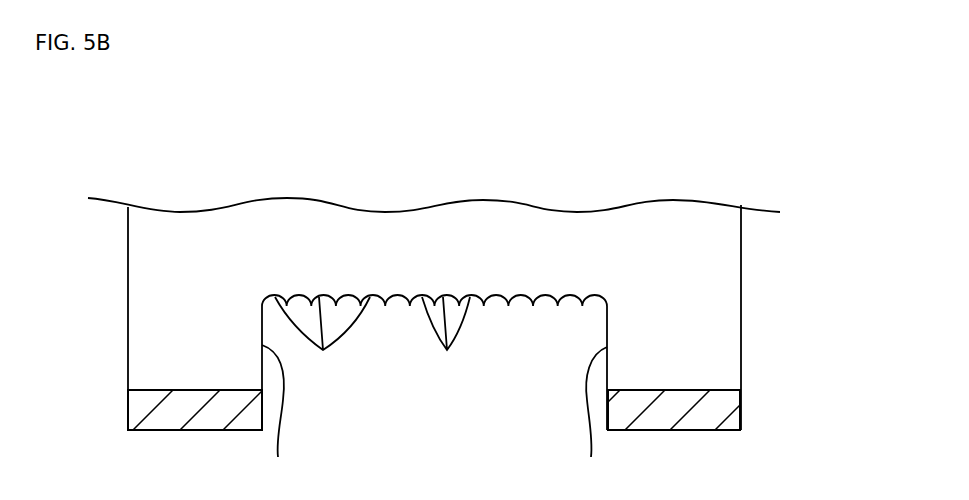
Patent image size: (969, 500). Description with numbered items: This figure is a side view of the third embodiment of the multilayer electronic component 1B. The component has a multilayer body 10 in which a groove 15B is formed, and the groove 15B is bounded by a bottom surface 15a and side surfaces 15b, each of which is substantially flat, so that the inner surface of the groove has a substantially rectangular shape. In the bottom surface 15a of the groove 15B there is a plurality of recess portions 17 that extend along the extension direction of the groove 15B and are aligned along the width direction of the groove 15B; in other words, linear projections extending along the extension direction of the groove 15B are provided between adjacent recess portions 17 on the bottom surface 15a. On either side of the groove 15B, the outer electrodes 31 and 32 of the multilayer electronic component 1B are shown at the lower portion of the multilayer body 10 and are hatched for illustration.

The multilayer electronic component 1B is at (481, 136).
The multilayer body 10 is at (725, 257).
The outer electrode 31 is at (198, 417).
The outer electrode 32 is at (678, 418).
The groove 15B is at (492, 372).
The bottom surface 15a is at (531, 326).
The side surfaces 15b is at (435, 418).
The recess portions 17 is at (372, 340).